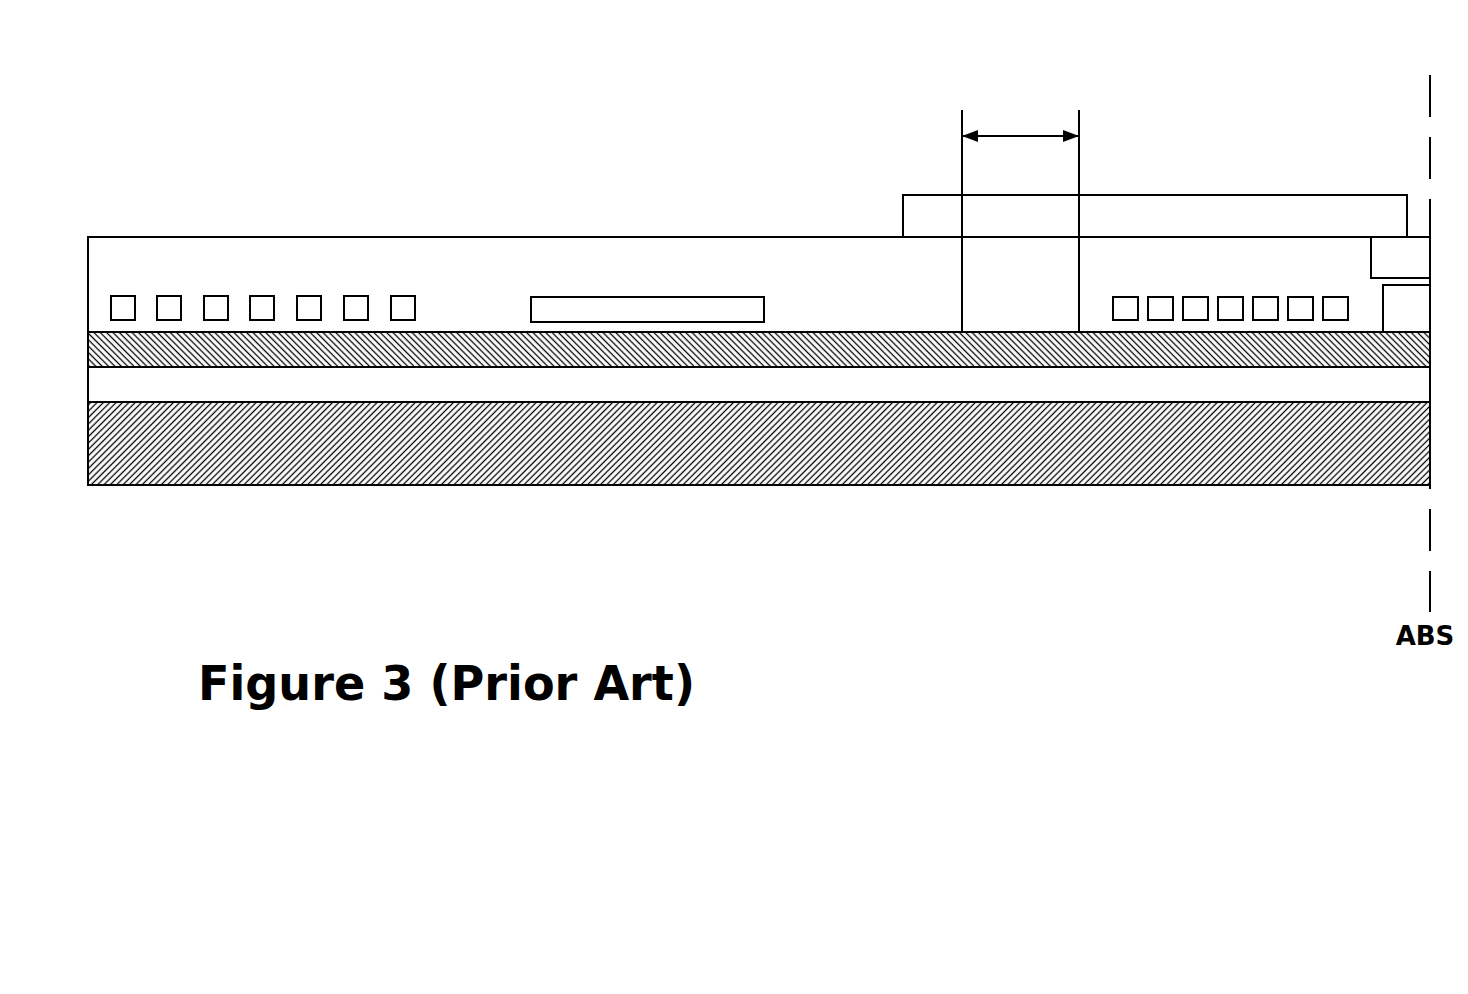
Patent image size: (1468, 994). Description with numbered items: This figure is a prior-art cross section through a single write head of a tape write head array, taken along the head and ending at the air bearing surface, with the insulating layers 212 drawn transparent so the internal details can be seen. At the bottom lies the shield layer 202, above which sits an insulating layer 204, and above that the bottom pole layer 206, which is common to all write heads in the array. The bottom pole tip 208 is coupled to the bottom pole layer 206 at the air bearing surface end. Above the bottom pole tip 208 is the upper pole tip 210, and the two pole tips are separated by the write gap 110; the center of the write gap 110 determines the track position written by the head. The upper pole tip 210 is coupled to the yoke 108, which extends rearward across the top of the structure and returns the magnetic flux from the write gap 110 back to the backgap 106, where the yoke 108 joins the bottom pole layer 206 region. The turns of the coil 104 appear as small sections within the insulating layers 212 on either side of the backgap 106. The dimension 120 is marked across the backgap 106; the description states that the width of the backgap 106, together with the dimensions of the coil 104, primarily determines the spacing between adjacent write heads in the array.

The coil 104 is at (322, 308).
The backgap 106 is at (1020, 285).
The yoke 108 is at (1167, 218).
The write gap 110 is at (1424, 280).
The yoke width dimension 120 is at (1020, 117).
The shield layer 202 is at (785, 457).
The insulating layer 204 is at (822, 395).
The bottom pole layer 206 is at (759, 349).
The bottom pole tip 208 is at (1393, 313).
The upper pole tip 210 is at (1401, 258).
The insulating layers 212 is at (452, 283).